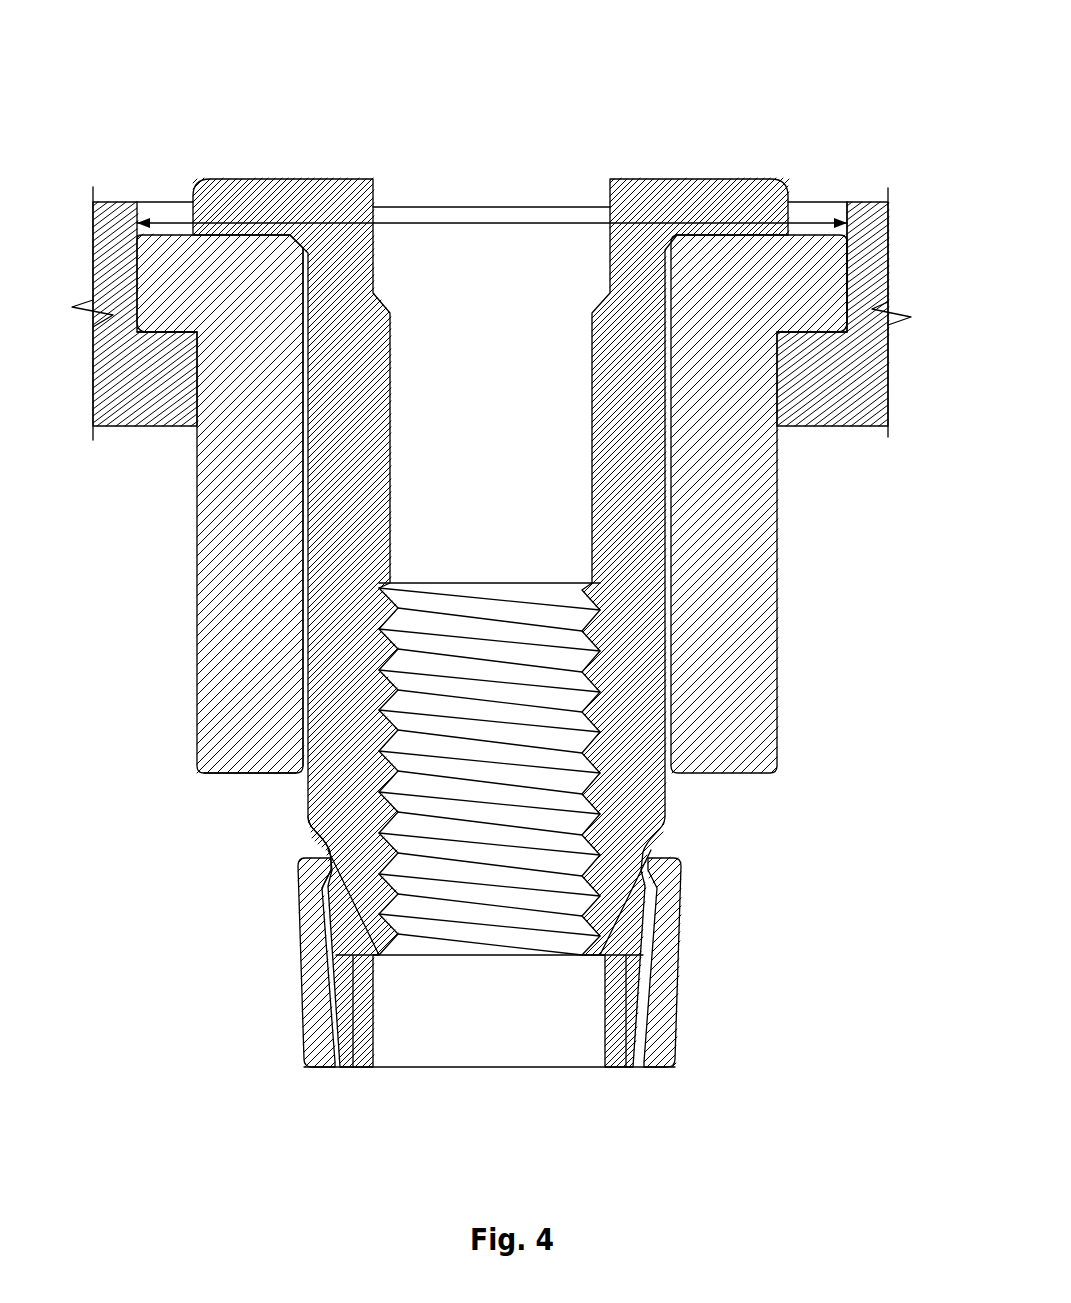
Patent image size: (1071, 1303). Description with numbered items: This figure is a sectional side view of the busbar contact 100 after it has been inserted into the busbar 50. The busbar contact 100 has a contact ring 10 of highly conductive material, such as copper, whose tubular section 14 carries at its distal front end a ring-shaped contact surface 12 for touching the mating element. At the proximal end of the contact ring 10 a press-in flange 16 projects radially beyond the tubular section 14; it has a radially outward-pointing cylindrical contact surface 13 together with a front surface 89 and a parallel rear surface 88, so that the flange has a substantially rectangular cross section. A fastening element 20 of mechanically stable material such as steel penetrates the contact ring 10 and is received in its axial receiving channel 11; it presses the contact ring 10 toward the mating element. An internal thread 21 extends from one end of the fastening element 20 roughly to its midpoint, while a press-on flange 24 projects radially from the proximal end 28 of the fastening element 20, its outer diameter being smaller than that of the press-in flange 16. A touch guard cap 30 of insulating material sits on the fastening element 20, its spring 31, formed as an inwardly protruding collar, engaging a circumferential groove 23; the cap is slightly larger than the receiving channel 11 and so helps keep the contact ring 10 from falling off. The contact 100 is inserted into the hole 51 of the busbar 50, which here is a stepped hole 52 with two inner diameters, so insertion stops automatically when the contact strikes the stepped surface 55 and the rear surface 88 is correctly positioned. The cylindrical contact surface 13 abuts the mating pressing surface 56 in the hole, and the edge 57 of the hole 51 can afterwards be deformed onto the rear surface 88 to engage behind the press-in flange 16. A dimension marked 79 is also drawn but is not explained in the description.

The busbar contact 100 is at (140, 45).
The contact ring 10 is at (760, 543).
The receiving channel 11 is at (309, 645).
The contact surface 12 is at (242, 773).
The cylindrical contact surface 13 is at (137, 257).
The tubular section 14 is at (250, 481).
The press-in flange 16 is at (822, 263).
The fastening element 20 is at (358, 293).
The internal thread 21 is at (377, 737).
The circumferential groove 23 is at (660, 862).
The press-on flange 24 is at (687, 193).
The proximal end 28 is at (208, 861).
The touch guard cap 30 is at (632, 1020).
The spring 31 is at (320, 878).
The busbar 50 is at (857, 236).
The hole 51 is at (807, 217).
The stepped hole 52 is at (848, 275).
The stepped surface 55 is at (810, 334).
The mating pressing surface 56 is at (137, 307).
The edge 57 is at (870, 200).
The head diameter 79 is at (472, 222).
The rear surface 88 is at (172, 232).
The front surface 89 is at (178, 332).